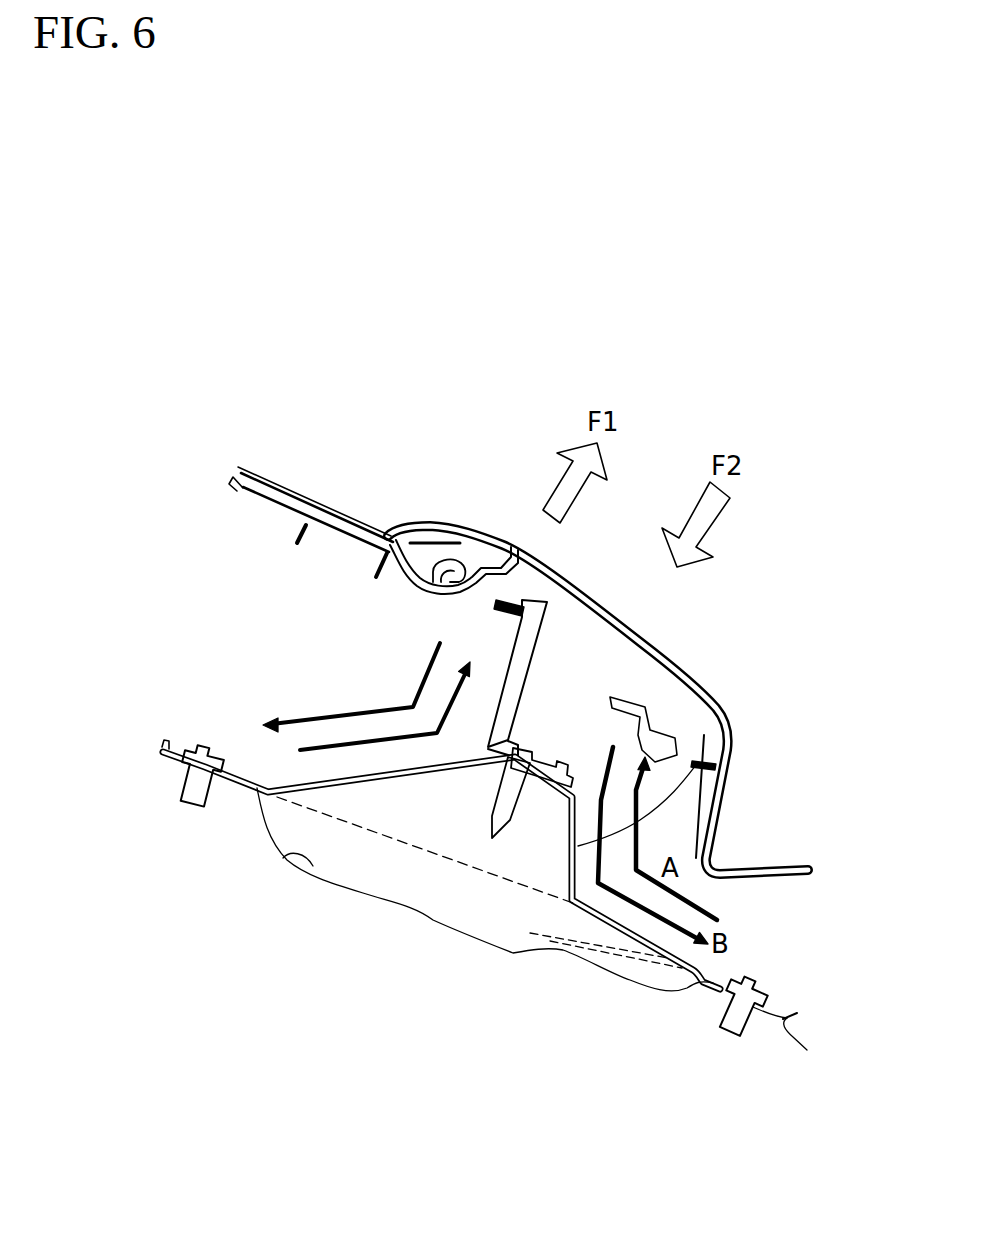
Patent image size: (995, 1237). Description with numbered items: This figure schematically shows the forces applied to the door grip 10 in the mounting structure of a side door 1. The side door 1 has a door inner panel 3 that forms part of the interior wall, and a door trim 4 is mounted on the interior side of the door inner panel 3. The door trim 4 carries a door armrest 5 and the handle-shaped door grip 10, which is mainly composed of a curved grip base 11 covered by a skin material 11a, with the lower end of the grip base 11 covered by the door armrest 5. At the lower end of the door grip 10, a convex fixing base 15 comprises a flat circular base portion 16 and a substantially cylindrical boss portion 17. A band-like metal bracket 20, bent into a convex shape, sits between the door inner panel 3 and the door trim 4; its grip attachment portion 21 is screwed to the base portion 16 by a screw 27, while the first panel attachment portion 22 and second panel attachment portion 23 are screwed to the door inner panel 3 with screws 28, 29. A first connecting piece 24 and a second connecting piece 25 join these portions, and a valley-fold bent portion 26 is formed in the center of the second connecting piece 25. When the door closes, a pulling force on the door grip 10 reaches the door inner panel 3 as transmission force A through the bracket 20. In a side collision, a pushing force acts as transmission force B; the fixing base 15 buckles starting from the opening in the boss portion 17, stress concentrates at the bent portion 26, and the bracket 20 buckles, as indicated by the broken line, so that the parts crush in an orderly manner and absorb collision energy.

The side door 1 is at (611, 647).
The door inner panel 3 is at (283, 858).
The door trim 4 is at (593, 647).
The door armrest 5 is at (494, 530).
The door grip 10 is at (379, 510).
The grip base 11 is at (292, 508).
The skin material 11a is at (315, 512).
The fixing base 15 is at (569, 637).
The base portion 16 is at (643, 733).
The boss portion 17 is at (537, 630).
The bracket 20 is at (353, 793).
The grip attachment portion 21 is at (563, 762).
The first panel attachment portion 22 is at (180, 745).
The second panel attachment portion 23 is at (770, 1012).
The first connecting piece 24 is at (372, 775).
The second connecting piece 25 is at (718, 766).
The bent portion 26 is at (632, 862).
The screw 27 is at (530, 747).
The screw 28 is at (208, 746).
The screw 29 is at (752, 983).